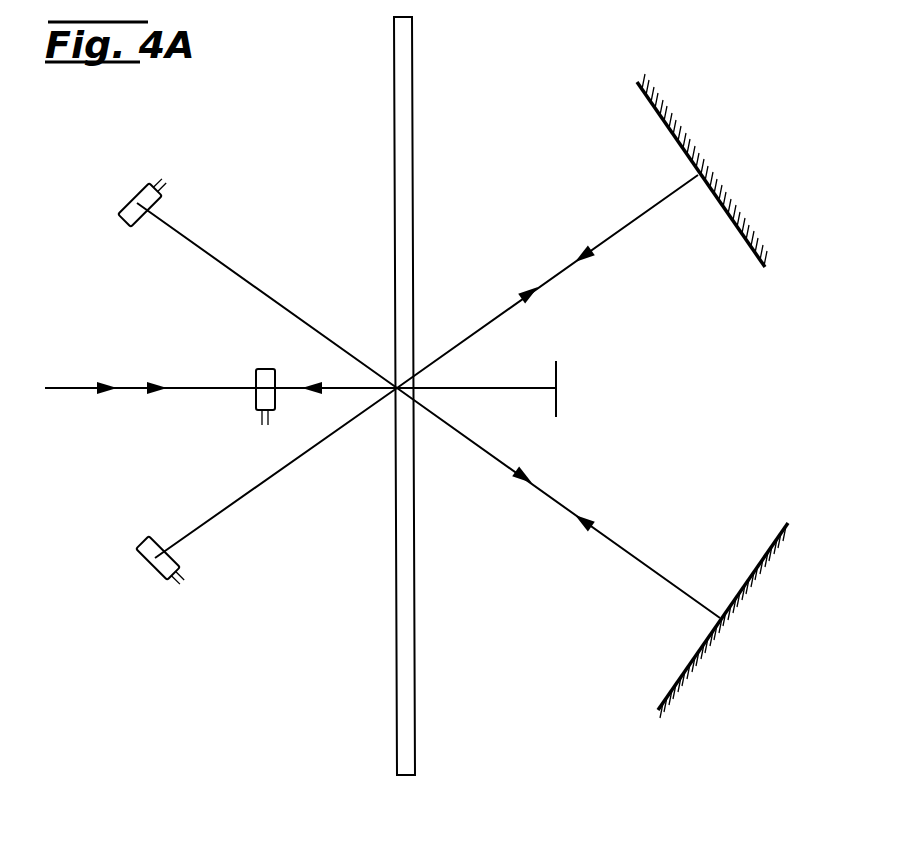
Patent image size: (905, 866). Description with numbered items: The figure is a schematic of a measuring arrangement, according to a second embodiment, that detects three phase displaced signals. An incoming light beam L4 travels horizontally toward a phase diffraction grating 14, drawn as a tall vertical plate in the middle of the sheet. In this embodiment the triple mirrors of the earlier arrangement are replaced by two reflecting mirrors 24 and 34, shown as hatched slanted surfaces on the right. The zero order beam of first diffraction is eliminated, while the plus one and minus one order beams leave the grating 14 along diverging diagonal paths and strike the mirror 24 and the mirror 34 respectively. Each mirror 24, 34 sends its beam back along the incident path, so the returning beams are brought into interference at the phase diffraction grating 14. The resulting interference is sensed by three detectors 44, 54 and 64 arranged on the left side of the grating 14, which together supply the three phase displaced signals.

The phase diffraction grating 14 is at (405, 103).
The light beam L4 is at (75, 388).
The reflecting mirror 24 is at (655, 113).
The reflecting mirror 34 is at (755, 565).
The detector 44 is at (135, 200).
The detector 54 is at (262, 378).
The detector 64 is at (150, 560).